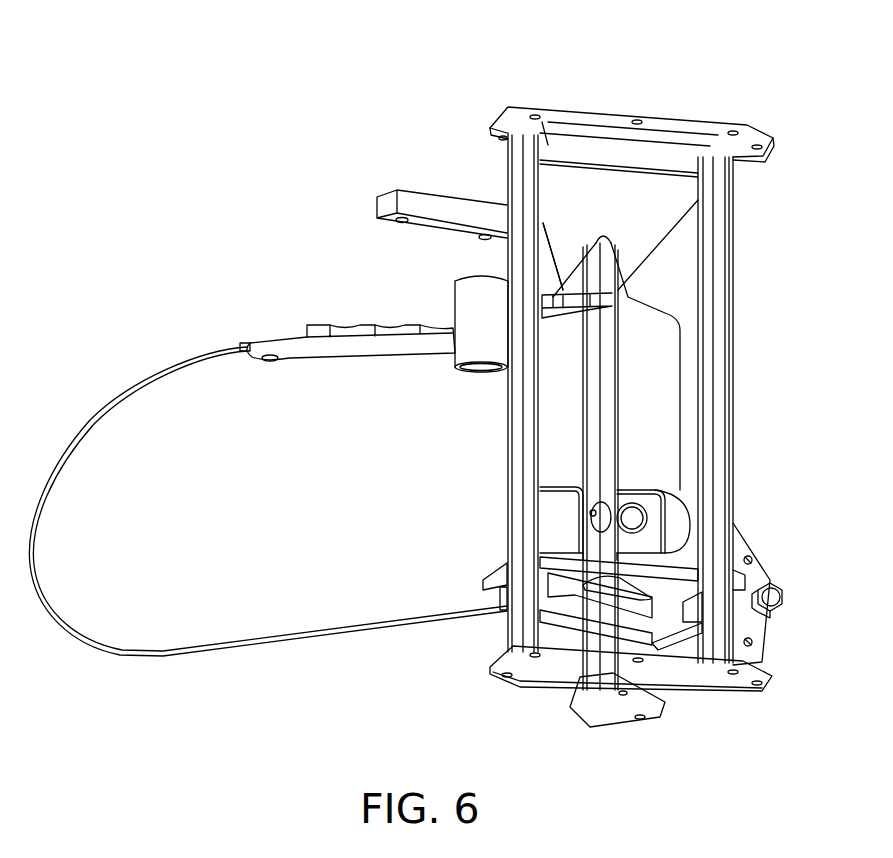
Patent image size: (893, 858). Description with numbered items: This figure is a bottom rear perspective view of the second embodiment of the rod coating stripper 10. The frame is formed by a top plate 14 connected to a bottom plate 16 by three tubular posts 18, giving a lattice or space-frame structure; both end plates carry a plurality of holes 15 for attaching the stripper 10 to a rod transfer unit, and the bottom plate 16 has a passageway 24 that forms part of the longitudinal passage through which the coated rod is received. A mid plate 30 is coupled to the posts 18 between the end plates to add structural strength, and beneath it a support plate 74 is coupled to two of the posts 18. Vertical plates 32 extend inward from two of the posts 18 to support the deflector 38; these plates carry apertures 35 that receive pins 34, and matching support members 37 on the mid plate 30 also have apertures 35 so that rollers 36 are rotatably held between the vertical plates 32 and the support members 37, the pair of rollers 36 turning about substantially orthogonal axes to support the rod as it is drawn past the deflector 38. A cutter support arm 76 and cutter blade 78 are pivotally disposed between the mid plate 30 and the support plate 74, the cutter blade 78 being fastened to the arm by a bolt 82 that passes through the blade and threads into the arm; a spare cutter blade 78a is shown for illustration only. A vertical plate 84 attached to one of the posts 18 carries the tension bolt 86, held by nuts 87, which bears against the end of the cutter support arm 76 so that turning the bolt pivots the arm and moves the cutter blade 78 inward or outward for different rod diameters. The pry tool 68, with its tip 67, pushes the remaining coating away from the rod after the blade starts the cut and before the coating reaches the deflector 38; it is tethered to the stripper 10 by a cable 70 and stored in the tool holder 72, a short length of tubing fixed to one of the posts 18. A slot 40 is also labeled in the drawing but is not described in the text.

The rod coating stripper 10 is at (470, 18).
The top plate 14 is at (692, 115).
The holes 15 is at (535, 113).
The bottom plate 16 is at (713, 690).
The posts 18 is at (527, 162).
The passageway 24 is at (570, 690).
The mid plate 30 is at (735, 525).
The vertical plates 32 is at (692, 385).
The pins 34 is at (622, 503).
The apertures 35 is at (643, 515).
The rollers 36 is at (560, 493).
The support members 37 is at (585, 555).
The deflector 38 is at (665, 208).
The slot 40 is at (620, 280).
The tip 67 is at (600, 300).
The pry tool 68 is at (322, 325).
The cable 70 is at (182, 358).
The tool holder 72 is at (478, 297).
The support plate 74 is at (706, 694).
The cutter support arm 76 is at (752, 558).
The cutter blade 78 is at (578, 625).
The spare cutter blade 78a is at (413, 195).
The bolt 82 is at (547, 650).
The vertical plate 84 is at (765, 645).
The tension bolt 86 is at (784, 597).
The nuts 87 is at (768, 622).